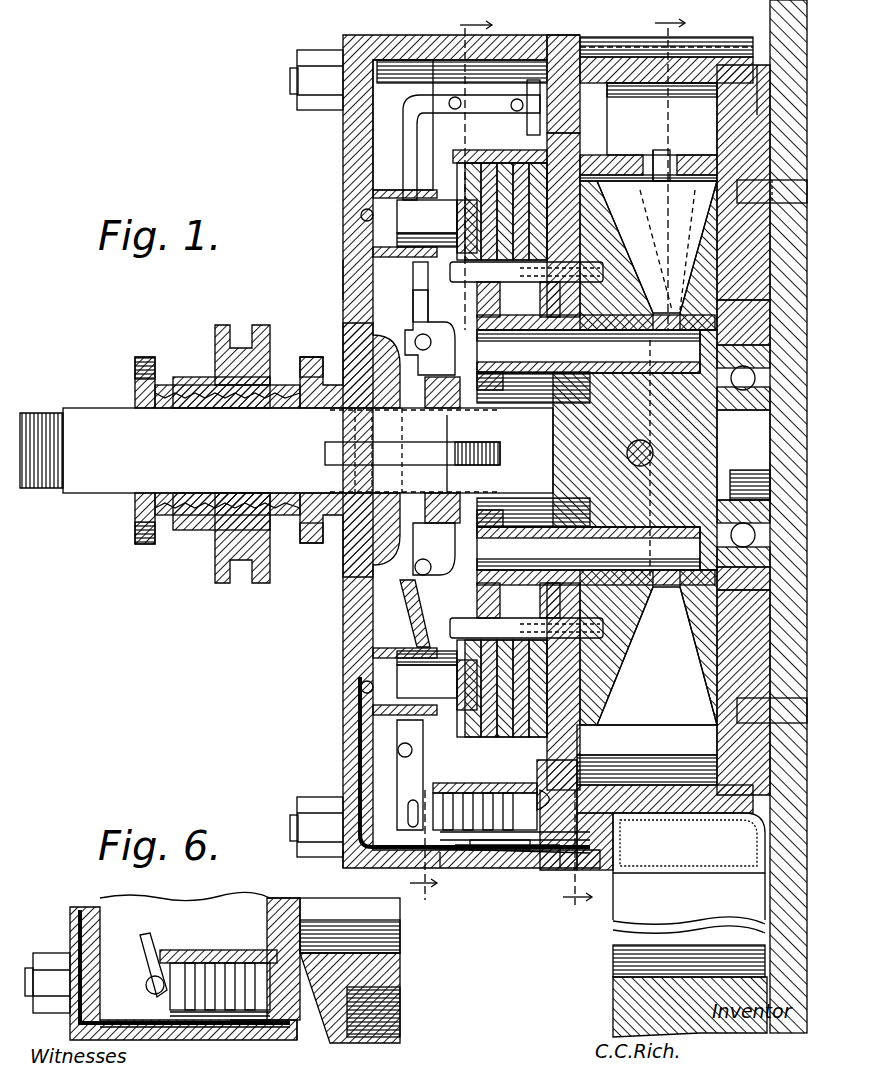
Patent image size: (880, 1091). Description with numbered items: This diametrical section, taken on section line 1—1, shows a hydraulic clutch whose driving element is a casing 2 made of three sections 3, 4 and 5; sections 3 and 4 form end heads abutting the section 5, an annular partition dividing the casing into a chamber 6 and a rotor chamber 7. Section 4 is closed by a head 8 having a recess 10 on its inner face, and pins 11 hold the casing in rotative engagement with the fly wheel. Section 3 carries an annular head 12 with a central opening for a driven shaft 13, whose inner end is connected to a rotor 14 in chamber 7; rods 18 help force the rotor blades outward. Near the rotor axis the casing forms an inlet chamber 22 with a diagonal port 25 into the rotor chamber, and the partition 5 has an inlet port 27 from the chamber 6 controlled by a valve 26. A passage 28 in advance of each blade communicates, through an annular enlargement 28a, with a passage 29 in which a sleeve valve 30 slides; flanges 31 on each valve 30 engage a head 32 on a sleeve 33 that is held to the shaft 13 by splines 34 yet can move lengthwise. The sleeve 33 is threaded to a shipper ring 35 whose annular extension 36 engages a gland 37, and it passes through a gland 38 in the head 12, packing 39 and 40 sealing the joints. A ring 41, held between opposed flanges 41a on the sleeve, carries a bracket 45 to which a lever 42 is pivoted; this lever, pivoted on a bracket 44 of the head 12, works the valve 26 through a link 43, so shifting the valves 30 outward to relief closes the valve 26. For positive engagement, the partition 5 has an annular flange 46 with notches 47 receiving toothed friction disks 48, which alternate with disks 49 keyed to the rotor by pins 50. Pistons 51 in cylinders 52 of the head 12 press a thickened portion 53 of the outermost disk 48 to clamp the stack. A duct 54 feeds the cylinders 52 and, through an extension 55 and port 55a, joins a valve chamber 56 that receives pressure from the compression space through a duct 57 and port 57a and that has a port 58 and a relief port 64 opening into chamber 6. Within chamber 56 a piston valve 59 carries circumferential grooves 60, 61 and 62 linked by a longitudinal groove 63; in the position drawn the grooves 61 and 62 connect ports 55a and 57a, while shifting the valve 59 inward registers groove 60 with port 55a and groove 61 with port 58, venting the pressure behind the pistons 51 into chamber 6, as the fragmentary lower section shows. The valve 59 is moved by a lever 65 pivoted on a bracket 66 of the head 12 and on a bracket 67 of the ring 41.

In FIG. 1, the section line 1— 1 is at (777, 94).
In FIG. 1, the casing 2 is at (612, 469).
In FIG. 1, the casing section 3 is at (430, 36).
In FIG. 6, the casing section 3 is at (70, 935).
In FIG. 1, the casing section 4 is at (630, 57).
In FIG. 6, the casing section 4 is at (350, 998).
In FIG. 1, the annular partition 5 is at (565, 36).
In FIG. 6, the annular partition 5 is at (278, 898).
In FIG. 1, the chamber 6 is at (385, 95).
In FIG. 1, the rotor chamber 7 is at (745, 65).
In FIG. 6, the rotor chamber 7 is at (350, 925).
In FIG. 1, the head 8 is at (772, 516).
In FIG. 1, the recess 10 is at (743, 445).
In FIG. 1, the pins 11 is at (772, 437).
In FIG. 1, the head 12 is at (345, 277).
In FIG. 1, the driven shaft 13 is at (286, 450).
In FIG. 1, the rotor 14 is at (632, 461).
In FIG. 1, the rods 18 is at (634, 467).
In FIG. 1, the inlet chamber 22 is at (680, 70).
In FIG. 1, the port 25 is at (662, 119).
In FIG. 1, the valve 26 is at (545, 60).
In FIG. 1, the inlet port 27 is at (585, 45).
In FIG. 1, the passage 28 is at (657, 437).
In FIG. 1, the annular enlargement 28a is at (647, 455).
In FIG. 1, the passage 29 is at (588, 456).
In FIG. 1, the sleeve valve 30 is at (588, 452).
In FIG. 1, the flanges 31 is at (700, 322).
In FIG. 1, the head 32 is at (533, 432).
In FIG. 1, the sleeve 33 is at (290, 535).
In FIG. 1, the splines 34 is at (480, 455).
In FIG. 1, the shipper ring 35 is at (235, 370).
In FIG. 1, the annular extension 36 is at (195, 530).
In FIG. 1, the gland 37 is at (506, 450).
In FIG. 1, the gland 38 is at (320, 357).
In FIG. 1, the packing 39 is at (413, 300).
In FIG. 1, the packing 40 is at (200, 385).
In FIG. 1, the ring 41 is at (485, 372).
In FIG. 1, the flanges 41a is at (430, 510).
In FIG. 1, the lever 42 is at (470, 108).
In FIG. 1, the link 43 is at (462, 73).
In FIG. 1, the bracket 44 is at (385, 145).
In FIG. 1, the bracket 45 is at (432, 332).
In FIG. 1, the annular flange 46 is at (470, 785).
In FIG. 1, the notches 47 is at (522, 112).
In FIG. 1, the friction disks 48 is at (465, 275).
In FIG. 1, the friction disks 49 is at (462, 175).
In FIG. 1, the pins 50 is at (440, 728).
In FIG. 1, the pistons 51 is at (437, 455).
In FIG. 1, the cylinders 52 is at (380, 235).
In FIG. 1, the annular thickened portion 53 is at (470, 200).
In FIG. 1, the duct 54 is at (360, 215).
In FIG. 1, the extension 55 is at (358, 770).
In FIG. 6, the extension 55 is at (85, 912).
In FIG. 1, the port 55a is at (455, 868).
In FIG. 6, the port 55a is at (160, 1028).
In FIG. 1, the valve chamber 56 is at (550, 790).
In FIG. 6, the valve chamber 56 is at (175, 950).
In FIG. 1, the duct 57 is at (520, 868).
In FIG. 6, the duct 57 is at (322, 1043).
In FIG. 1, the port 57a is at (475, 868).
In FIG. 6, the port 57a is at (220, 1040).
In FIG. 1, the port 58 is at (647, 739).
In FIG. 6, the port 58 is at (215, 952).
In FIG. 1, the piston valve 59 is at (369, 873).
In FIG. 6, the piston valve 59 is at (145, 997).
In FIG. 1, the circumferential groove 60 is at (448, 795).
In FIG. 6, the circumferential groove 60 is at (190, 963).
In FIG. 1, the circumferential groove 61 is at (445, 870).
In FIG. 6, the circumferential groove 61 is at (230, 963).
In FIG. 1, the circumferential groove 62 is at (560, 870).
In FIG. 6, the circumferential groove 62 is at (290, 900).
In FIG. 1, the longitudinal groove 63 is at (535, 868).
In FIG. 6, the longitudinal groove 63 is at (255, 1040).
In FIG. 1, the relief port 64 is at (647, 764).
In FIG. 6, the relief port 64 is at (290, 1040).
In FIG. 1, the lever 65 is at (412, 620).
In FIG. 6, the lever 65 is at (145, 935).
In FIG. 1, the bracket 66 is at (390, 745).
In FIG. 1, the bracket 67 is at (434, 558).